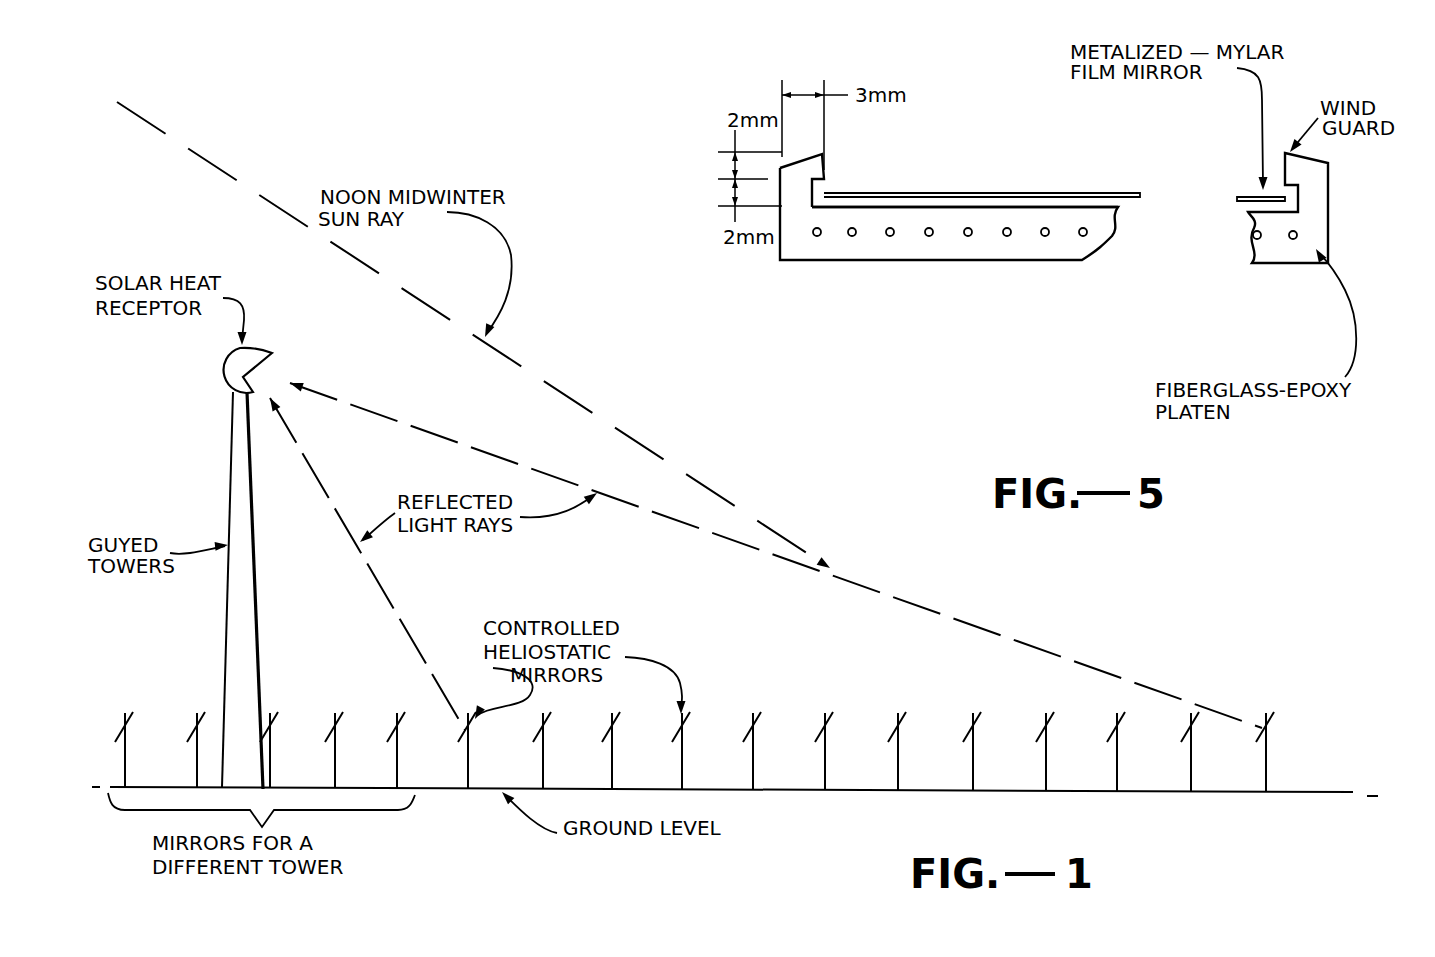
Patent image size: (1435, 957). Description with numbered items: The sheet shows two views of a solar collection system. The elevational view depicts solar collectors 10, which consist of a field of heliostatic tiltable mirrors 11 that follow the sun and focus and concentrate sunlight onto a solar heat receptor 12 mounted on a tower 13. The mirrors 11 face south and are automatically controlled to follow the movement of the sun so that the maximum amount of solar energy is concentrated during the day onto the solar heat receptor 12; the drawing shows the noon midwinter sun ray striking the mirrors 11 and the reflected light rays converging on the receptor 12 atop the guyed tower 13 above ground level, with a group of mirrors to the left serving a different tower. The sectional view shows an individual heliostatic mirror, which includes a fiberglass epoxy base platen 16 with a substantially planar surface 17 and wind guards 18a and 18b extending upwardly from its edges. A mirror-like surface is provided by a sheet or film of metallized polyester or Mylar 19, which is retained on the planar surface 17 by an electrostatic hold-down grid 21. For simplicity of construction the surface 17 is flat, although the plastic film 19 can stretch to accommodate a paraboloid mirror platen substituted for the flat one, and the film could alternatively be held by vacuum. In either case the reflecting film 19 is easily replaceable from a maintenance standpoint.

In FIG. 1, the solar collectors 10 is at (735, 695).
In FIG. 1, the heliostatic tiltable mirrors 11 is at (898, 724).
In FIG. 1, the solar heat receptor 12 is at (265, 349).
In FIG. 1, the tower 13 is at (232, 455).
In FIG. 5, the fiberglass epoxy base platen 16 is at (977, 253).
In FIG. 5, the planar surface 17 is at (933, 207).
In FIG. 5, the wind guard 18a is at (812, 168).
In FIG. 5, the wind guard 18b is at (1300, 174).
In FIG. 5, the metallized polyester film 19 is at (1018, 193).
In FIG. 5, the electrostatic hold-down grid 21 is at (982, 309).